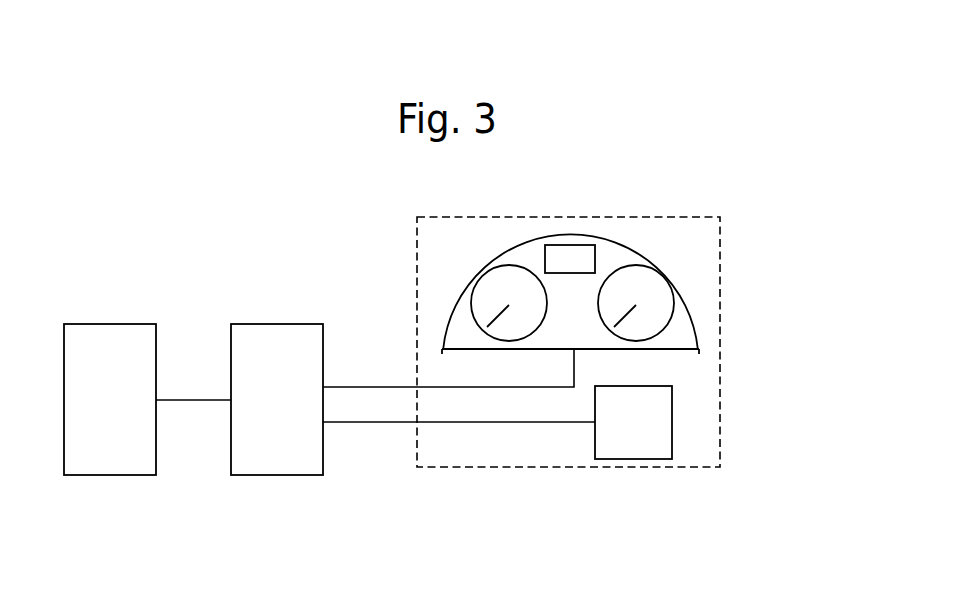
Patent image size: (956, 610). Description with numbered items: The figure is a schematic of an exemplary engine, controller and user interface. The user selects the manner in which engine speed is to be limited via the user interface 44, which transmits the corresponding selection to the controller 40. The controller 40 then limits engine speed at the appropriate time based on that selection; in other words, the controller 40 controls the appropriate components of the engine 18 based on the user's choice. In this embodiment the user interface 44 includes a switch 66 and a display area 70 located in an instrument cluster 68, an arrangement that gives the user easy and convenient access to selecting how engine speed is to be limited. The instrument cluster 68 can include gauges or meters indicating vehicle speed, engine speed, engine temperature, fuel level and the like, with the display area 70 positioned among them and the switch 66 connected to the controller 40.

The engine 18 is at (123, 406).
The controller 40 is at (263, 406).
The user interface 44 is at (720, 450).
The switch 66 is at (618, 429).
The instrument cluster 68 is at (673, 282).
The display area 70 is at (572, 245).